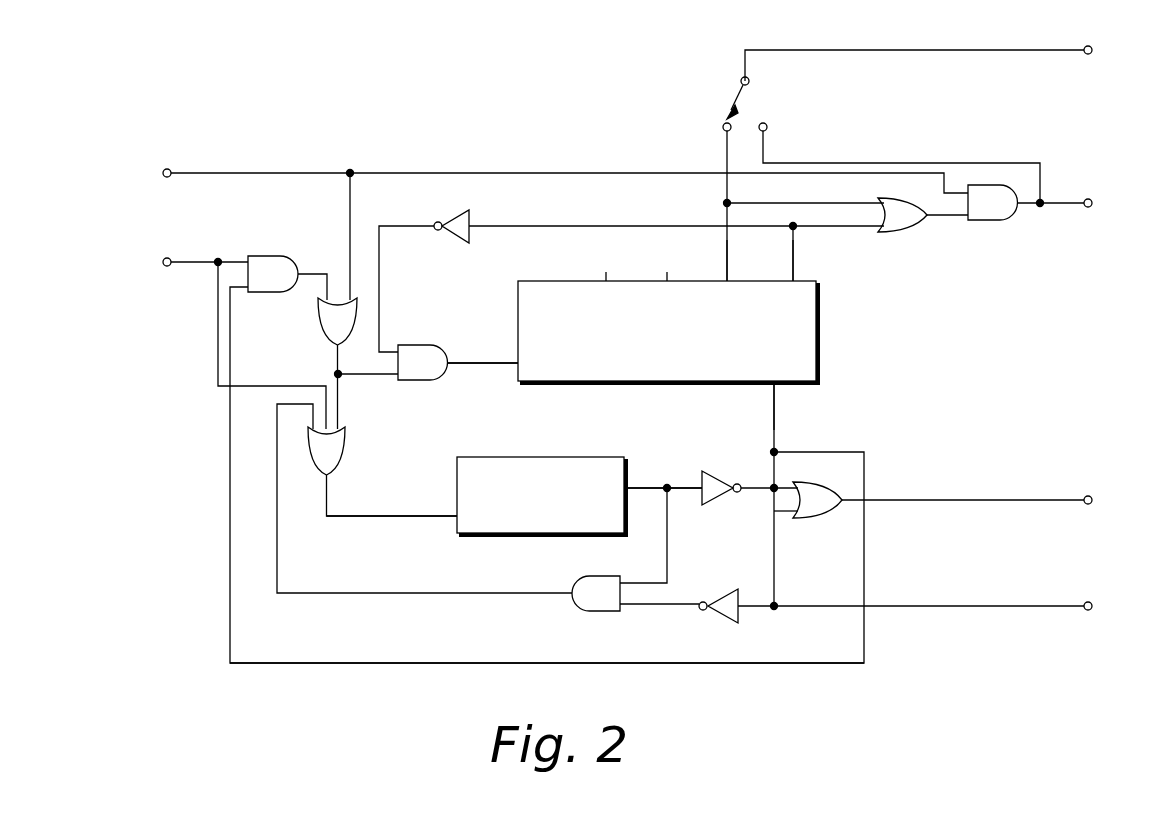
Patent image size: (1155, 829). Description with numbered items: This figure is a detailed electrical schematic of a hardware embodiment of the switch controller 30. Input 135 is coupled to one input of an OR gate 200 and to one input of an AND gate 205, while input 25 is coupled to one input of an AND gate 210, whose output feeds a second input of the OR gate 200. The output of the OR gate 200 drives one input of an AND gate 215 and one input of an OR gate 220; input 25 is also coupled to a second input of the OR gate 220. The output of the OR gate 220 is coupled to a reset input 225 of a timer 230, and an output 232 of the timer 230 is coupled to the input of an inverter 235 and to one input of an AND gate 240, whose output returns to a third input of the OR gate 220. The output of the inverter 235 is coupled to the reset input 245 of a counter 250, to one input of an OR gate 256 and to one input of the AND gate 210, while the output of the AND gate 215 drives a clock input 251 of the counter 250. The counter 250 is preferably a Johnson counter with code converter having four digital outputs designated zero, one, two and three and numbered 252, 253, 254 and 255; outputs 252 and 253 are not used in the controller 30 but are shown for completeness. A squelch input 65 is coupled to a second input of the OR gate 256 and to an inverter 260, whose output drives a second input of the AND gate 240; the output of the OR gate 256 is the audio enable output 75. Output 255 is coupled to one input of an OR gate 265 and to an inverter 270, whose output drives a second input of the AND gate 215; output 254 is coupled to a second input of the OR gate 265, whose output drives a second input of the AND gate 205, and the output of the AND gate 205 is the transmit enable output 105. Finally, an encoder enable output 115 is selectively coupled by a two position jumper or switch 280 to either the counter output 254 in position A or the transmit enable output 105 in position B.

The input 25 is at (163, 265).
The switch controller 30 is at (973, 690).
The squelch input 65 is at (1092, 609).
The audio enable output 75 is at (1092, 503).
The transmit enable output 105 is at (1092, 206).
The encoder enable output 115 is at (1092, 53).
The input 135 is at (163, 176).
The OR gate 200 is at (319, 316).
The AND gate 205 is at (990, 221).
The AND gate 210 is at (272, 256).
The AND gate 215 is at (423, 345).
The OR gate 220 is at (345, 452).
The reset input 225 is at (452, 516).
The timer 230 is at (575, 457).
The output 232 is at (632, 483).
The inverter 235 is at (715, 473).
The AND gate 240 is at (577, 612).
The reset input 245 is at (768, 386).
The counter 250 is at (820, 327).
The clock input 251 is at (507, 366).
The counter output 0 252 is at (606, 276).
The counter output 1 253 is at (667, 276).
The counter output 2 254 is at (733, 276).
The counter output 3 255 is at (798, 276).
The OR gate 256 is at (808, 518).
The inverter 260 is at (727, 622).
The OR gate 265 is at (893, 232).
The inverter 270 is at (455, 243).
The switch 280 is at (732, 100).